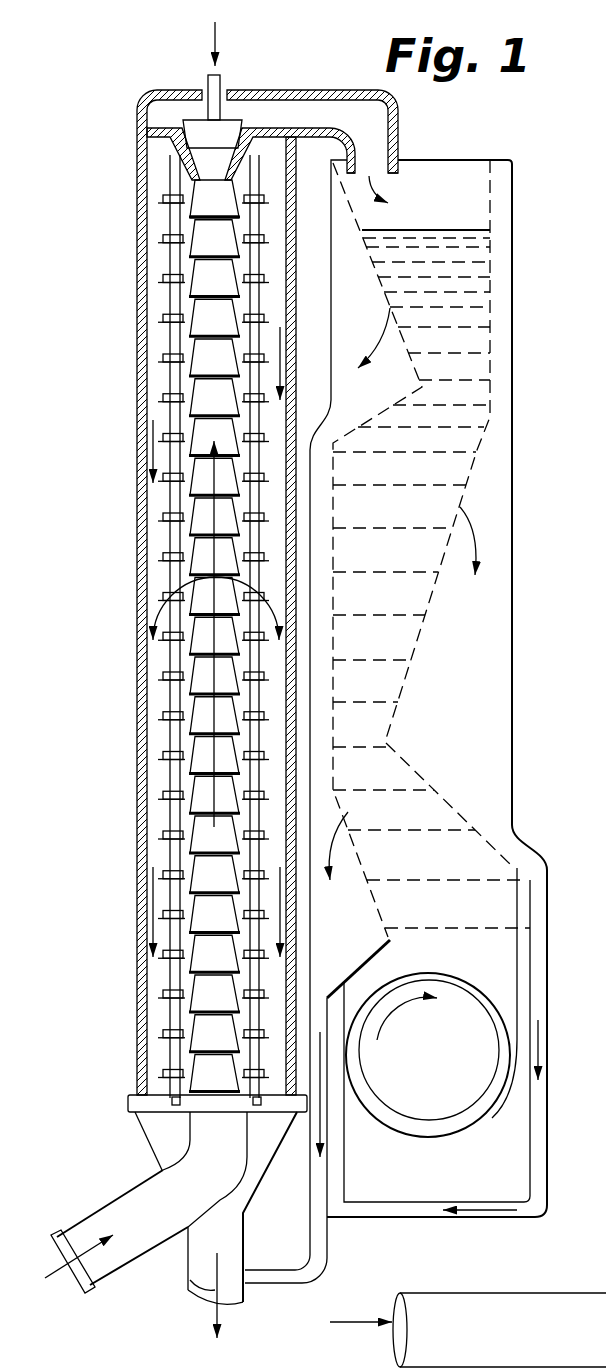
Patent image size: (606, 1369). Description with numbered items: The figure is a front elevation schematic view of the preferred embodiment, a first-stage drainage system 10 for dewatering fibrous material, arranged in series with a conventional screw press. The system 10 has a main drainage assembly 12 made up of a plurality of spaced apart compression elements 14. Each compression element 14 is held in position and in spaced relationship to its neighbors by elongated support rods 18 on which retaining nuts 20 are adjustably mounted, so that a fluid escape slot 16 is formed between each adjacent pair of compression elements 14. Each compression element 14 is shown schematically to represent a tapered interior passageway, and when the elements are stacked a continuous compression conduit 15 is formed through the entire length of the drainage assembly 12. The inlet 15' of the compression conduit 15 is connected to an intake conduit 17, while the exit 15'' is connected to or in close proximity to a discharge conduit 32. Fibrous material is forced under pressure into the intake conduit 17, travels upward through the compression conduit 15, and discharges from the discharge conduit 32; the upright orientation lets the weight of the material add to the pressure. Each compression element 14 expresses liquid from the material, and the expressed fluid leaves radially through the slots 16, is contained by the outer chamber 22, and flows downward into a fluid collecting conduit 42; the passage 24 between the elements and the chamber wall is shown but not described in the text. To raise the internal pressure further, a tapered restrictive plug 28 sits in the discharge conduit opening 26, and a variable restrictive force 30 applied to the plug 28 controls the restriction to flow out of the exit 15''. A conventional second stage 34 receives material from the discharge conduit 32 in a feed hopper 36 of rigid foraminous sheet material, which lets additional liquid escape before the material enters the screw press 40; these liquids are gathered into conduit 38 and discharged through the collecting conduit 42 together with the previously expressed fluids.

The first-stage drainage system 10 is at (136, 493).
The main drainage assembly 12 is at (192, 352).
The compression element 14 is at (192, 320).
The compression conduit 15 is at (149, 596).
The inlet 15' is at (203, 1076).
The exit 15'' is at (142, 154).
The fluid escape slot 16 is at (165, 255).
The intake conduit 17 is at (94, 1212).
The support rod 18 is at (167, 180).
The retaining nut 20 is at (170, 553).
The outer chamber 22 is at (136, 690).
The annular passage 24 is at (160, 736).
The discharge conduit opening 26 is at (231, 170).
The restrictive plug 28 is at (233, 120).
The restrictive force 30 is at (216, 30).
The discharge conduit 32 is at (398, 138).
The second stage 34 is at (514, 475).
The feed hopper 36 is at (492, 417).
The conduit 38 is at (328, 1240).
The screw press 40 is at (494, 1001).
The fluid collecting conduit 42 is at (187, 1262).